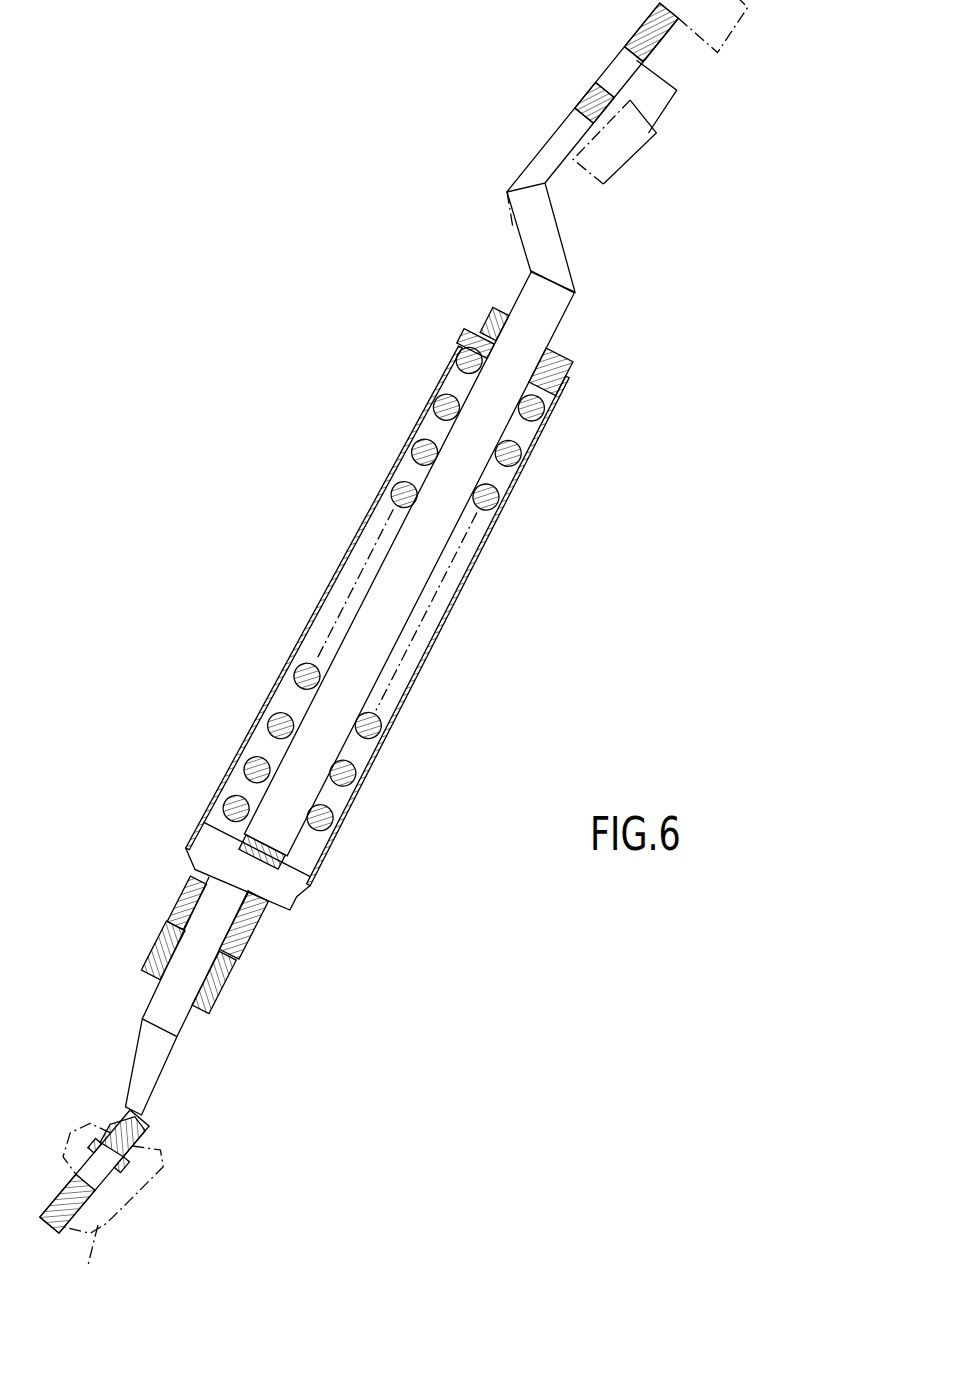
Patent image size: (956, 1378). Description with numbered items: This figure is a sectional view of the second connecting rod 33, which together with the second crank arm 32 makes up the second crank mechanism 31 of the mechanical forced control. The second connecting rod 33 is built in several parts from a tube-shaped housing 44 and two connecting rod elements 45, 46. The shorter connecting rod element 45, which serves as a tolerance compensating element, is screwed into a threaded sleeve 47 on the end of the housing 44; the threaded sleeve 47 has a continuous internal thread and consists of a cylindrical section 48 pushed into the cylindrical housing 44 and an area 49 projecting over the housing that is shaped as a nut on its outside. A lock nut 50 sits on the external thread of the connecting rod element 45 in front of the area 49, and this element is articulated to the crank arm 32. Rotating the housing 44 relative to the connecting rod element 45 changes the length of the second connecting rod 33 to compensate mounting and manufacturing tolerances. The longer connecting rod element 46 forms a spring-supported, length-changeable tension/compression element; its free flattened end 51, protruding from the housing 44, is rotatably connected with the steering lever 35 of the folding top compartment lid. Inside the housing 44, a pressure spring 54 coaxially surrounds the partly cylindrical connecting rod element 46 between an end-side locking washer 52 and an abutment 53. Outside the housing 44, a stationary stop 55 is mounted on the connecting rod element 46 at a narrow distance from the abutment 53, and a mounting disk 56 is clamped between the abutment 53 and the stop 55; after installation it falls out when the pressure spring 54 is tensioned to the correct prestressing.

The second crank mechanism 31 is at (166, 1140).
The second crank arm 32 is at (95, 1262).
The second connecting rod 33 is at (459, 632).
The steering lever 35 is at (738, 43).
The tube-shaped housing 44 is at (340, 565).
The connecting rod element 45 is at (128, 1047).
The connecting rod element 46 is at (531, 157).
The threaded sleeve 47 is at (185, 903).
The cylindrical section 48 is at (265, 930).
The area 49 is at (245, 975).
The lock nut 50 is at (150, 957).
The free flattened end 51 is at (565, 178).
The end-side locking washer 52 is at (300, 880).
The abutment 53 is at (470, 345).
The pressure spring 54 is at (485, 522).
The stationary stop 55 is at (562, 345).
The mounting disk 56 is at (492, 318).